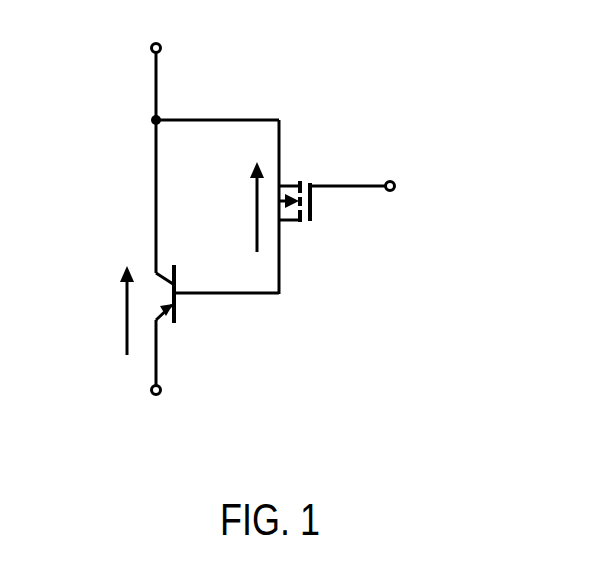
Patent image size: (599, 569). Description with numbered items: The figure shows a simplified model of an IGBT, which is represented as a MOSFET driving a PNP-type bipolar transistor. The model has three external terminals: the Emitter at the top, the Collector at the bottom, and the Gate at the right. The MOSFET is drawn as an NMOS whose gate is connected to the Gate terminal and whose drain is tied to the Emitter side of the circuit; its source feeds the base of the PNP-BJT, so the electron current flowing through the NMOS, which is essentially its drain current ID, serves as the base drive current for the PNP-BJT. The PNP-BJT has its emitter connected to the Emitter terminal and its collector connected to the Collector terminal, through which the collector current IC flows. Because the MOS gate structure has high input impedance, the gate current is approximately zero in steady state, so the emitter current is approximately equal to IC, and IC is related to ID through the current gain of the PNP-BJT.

The emitter terminal Emitter is at (196, 137).
The collector terminal Collector is at (167, 375).
The gate terminal Gate is at (385, 184).
The MOSFET NMOS is at (328, 171).
The PNP-type BJT PNP-BJT is at (233, 276).
The drain current ID is at (242, 207).
The collector current IC is at (110, 310).